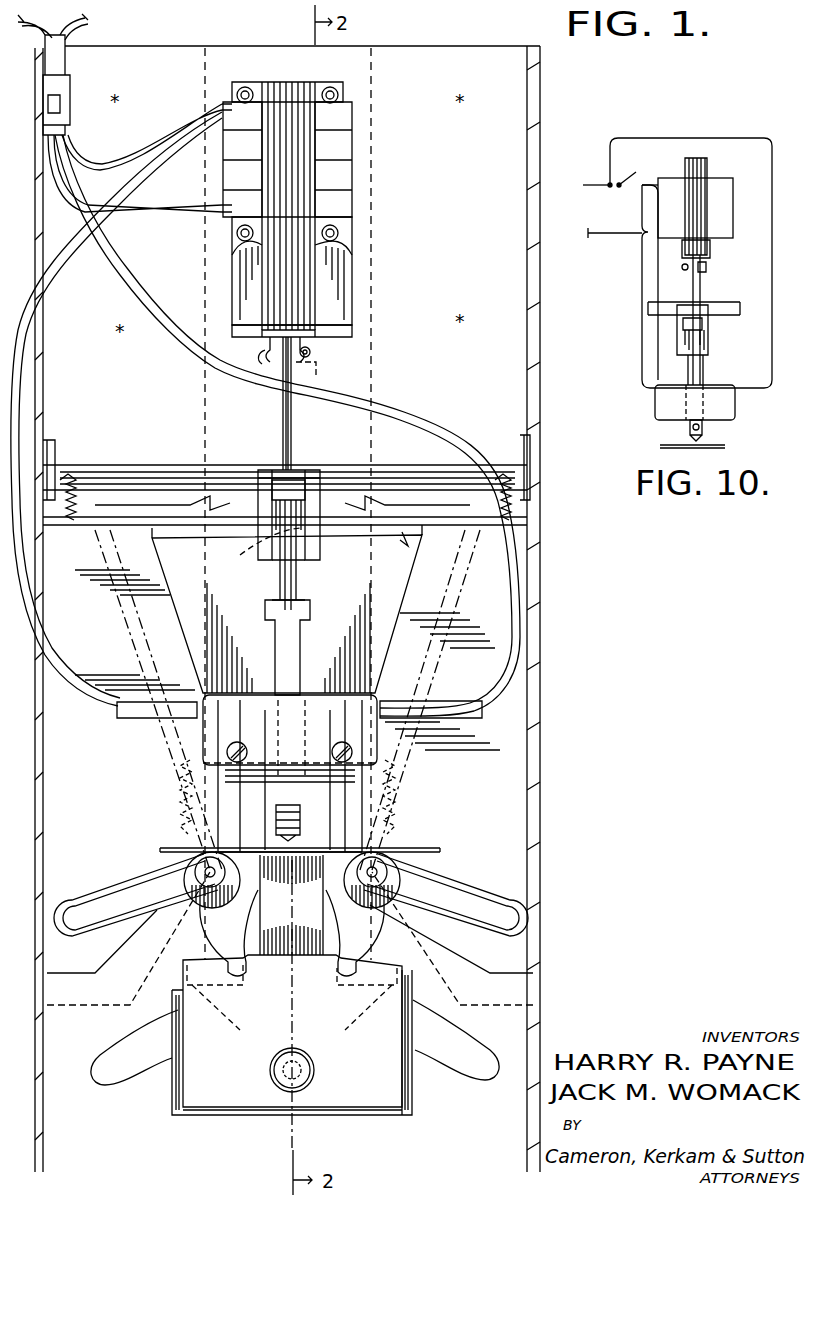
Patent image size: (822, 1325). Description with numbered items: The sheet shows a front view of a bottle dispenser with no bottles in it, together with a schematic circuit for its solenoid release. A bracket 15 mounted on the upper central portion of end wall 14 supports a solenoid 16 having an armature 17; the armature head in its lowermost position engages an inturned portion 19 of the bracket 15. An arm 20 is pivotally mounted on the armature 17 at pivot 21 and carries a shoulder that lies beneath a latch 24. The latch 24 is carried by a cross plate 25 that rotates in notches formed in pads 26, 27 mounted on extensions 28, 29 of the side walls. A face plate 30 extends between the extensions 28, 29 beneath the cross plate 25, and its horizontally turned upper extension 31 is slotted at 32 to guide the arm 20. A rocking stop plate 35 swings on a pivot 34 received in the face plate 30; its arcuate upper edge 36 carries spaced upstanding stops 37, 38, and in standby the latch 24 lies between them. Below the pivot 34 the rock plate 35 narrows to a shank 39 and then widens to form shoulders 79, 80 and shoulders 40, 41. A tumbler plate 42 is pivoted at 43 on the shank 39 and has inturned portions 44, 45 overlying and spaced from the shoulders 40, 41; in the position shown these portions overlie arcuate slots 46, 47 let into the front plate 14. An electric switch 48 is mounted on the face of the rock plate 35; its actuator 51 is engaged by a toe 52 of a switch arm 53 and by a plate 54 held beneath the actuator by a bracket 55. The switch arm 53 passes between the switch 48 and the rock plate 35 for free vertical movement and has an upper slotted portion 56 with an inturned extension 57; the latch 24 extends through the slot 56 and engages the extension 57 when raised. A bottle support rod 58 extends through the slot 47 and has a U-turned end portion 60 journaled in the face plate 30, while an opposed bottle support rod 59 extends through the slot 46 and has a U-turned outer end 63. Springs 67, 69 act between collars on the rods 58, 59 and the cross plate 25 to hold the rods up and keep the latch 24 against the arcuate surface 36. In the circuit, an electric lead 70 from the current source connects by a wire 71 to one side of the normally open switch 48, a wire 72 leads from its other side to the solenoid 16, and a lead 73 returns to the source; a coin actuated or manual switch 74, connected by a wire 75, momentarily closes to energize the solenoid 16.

In FIG. 1, the end wall 14 is at (475, 250).
In FIG. 1, the bracket 15 is at (343, 256).
In FIG. 1, the solenoid 16 is at (352, 140).
In FIG. 10, the solenoid 16 is at (722, 178).
In FIG. 1, the armature 17 is at (314, 287).
In FIG. 10, the armature 17 is at (710, 255).
In FIG. 1, the inturned portion 19 is at (340, 330).
In FIG. 1, the arm 20 is at (292, 385).
In FIG. 10, the arm 20 is at (701, 282).
In FIG. 1, the pivot 21 is at (310, 352).
In FIG. 10, the pivot 21 is at (682, 267).
In FIG. 1, the latch 24 is at (270, 505).
In FIG. 10, the latch 24 is at (683, 317).
In FIG. 1, the cross plate 25 is at (352, 470).
In FIG. 10, the cross plate 25 is at (735, 303).
In FIG. 1, the pad 26 is at (50, 455).
In FIG. 1, the pad 27 is at (530, 452).
In FIG. 1, the extension 28 is at (43, 372).
In FIG. 1, the extension 29 is at (540, 338).
In FIG. 1, the face plate 30 is at (105, 945).
In FIG. 1, the upper extension 31 is at (432, 528).
In FIG. 1, the slot 32 is at (238, 549).
In FIG. 1, the pivot 34 is at (305, 838).
In FIG. 1, the rocking stop plate 35 is at (358, 638).
In FIG. 1, the arcuate upper edge 36 is at (400, 545).
In FIG. 1, the stop 37 is at (208, 506).
In FIG. 1, the stop 38 is at (372, 506).
In FIG. 1, the shank 39 is at (308, 900).
In FIG. 1, the shoulder 40 is at (225, 1010).
In FIG. 1, the shoulder 41 is at (360, 1010).
In FIG. 1, the tumbler plate 42 is at (362, 1069).
In FIG. 1, the pivot 43 is at (290, 1048).
In FIG. 1, the inturned portion 44 is at (222, 955).
In FIG. 1, the inturned portion 45 is at (372, 955).
In FIG. 1, the arcuate slot 46 is at (118, 1046).
In FIG. 1, the arcuate slot 47 is at (482, 1048).
In FIG. 1, the electric switch 48 is at (378, 700).
In FIG. 10, the electric switch 48 is at (735, 405).
In FIG. 1, the actuator 51 is at (301, 820).
In FIG. 10, the actuator 51 is at (704, 430).
In FIG. 10, the toe 52 is at (690, 437).
In FIG. 1, the switch arm 53 is at (276, 660).
In FIG. 10, the switch arm 53 is at (705, 367).
In FIG. 1, the plate 54 is at (425, 848).
In FIG. 10, the plate 54 is at (726, 447).
In FIG. 1, the bracket 55 is at (352, 778).
In FIG. 1, the upper slotted portion 56 is at (300, 548).
In FIG. 10, the upper slotted portion 56 is at (708, 340).
In FIG. 1, the inturned extension 57 is at (270, 475).
In FIG. 10, the inturned extension 57 is at (690, 308).
In FIG. 1, the bottle support rod 58 is at (378, 871).
In FIG. 1, the opposed bottle support rod 59 is at (205, 871).
In FIG. 1, the U-turned end portion 60 is at (480, 893).
In FIG. 1, the U-turned outer end 63 is at (115, 893).
In FIG. 1, the spring 67 is at (412, 800).
In FIG. 1, the spring 69 is at (85, 505).
In FIG. 10, the electric lead 70 is at (590, 183).
In FIG. 1, the wire 71 is at (420, 428).
In FIG. 10, the wire 71 is at (690, 138).
In FIG. 1, the wire 72 is at (65, 682).
In FIG. 10, the wire 72 is at (642, 357).
In FIG. 1, the lead 73 is at (154, 213).
In FIG. 10, the lead 73 is at (596, 238).
In FIG. 10, the switch 74 is at (624, 178).
In FIG. 1, the wire 75 is at (120, 166).
In FIG. 10, the wire 75 is at (648, 185).
In FIG. 1, the shoulder 79 is at (256, 938).
In FIG. 1, the shoulder 80 is at (326, 938).